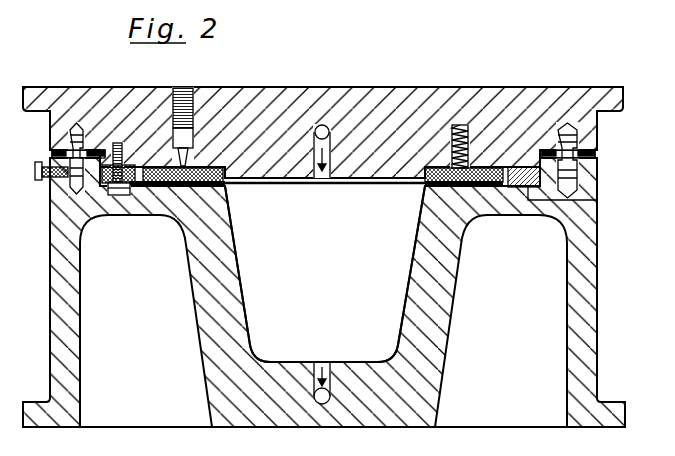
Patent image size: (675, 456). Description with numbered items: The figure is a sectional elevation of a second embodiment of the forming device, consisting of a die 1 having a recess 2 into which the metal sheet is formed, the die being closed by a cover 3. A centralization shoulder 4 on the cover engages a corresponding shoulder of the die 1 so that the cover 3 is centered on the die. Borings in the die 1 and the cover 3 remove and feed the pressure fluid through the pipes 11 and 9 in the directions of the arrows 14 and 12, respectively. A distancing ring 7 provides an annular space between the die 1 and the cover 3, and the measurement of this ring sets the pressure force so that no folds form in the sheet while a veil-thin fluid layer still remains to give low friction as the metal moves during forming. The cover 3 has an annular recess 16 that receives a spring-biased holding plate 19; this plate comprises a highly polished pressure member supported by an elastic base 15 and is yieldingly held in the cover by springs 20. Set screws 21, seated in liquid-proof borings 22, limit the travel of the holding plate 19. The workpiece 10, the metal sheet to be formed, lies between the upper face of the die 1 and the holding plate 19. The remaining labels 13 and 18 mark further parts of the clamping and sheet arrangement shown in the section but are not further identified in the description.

The die 1 is at (428, 291).
The recess 2 is at (337, 247).
The cover 3 is at (443, 110).
The centralization shoulder 4 is at (535, 165).
The distancing ring 7 is at (550, 200).
The pipe 9 is at (323, 125).
The workpiece 10 is at (258, 180).
The pipe 11 is at (322, 404).
The arrow 12 is at (328, 172).
The sheet 13 is at (288, 177).
The arrow 14 is at (318, 385).
The elastic base 15 is at (157, 176).
The annular recess 16 is at (435, 172).
The adjusting screw 18 is at (223, 188).
The holding plate 19 is at (147, 170).
The springs 20 is at (460, 128).
The set screws 21 is at (188, 155).
The liquid-proof borings 22 is at (183, 88).